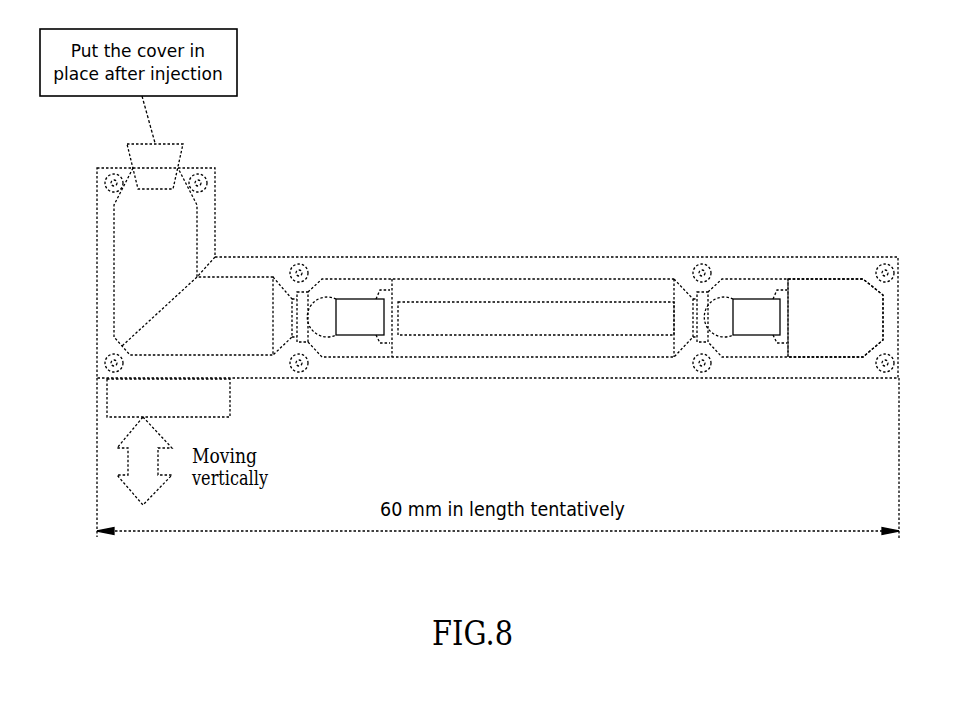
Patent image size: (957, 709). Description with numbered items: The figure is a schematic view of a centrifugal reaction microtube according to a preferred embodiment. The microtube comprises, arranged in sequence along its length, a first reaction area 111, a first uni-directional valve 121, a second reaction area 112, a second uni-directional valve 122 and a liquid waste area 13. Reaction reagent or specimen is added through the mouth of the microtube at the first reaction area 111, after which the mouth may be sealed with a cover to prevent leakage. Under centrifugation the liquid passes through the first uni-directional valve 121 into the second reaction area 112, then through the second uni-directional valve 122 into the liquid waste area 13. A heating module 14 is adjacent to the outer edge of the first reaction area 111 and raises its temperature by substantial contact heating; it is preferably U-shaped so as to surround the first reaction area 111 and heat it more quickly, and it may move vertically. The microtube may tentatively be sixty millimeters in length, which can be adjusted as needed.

The first reaction area 111 is at (133, 283).
The first uni-directional valve 121 is at (355, 296).
The second reaction area 112 is at (502, 296).
The second uni-directional valve 122 is at (745, 300).
The liquid waste area 13 is at (828, 300).
The heating module 14 is at (113, 402).